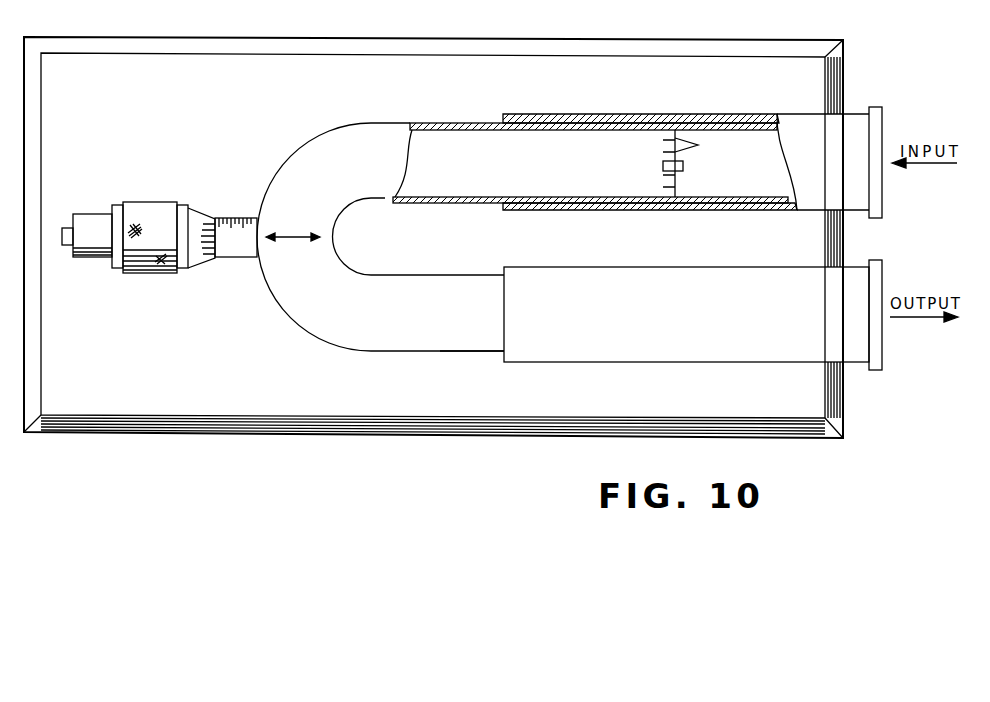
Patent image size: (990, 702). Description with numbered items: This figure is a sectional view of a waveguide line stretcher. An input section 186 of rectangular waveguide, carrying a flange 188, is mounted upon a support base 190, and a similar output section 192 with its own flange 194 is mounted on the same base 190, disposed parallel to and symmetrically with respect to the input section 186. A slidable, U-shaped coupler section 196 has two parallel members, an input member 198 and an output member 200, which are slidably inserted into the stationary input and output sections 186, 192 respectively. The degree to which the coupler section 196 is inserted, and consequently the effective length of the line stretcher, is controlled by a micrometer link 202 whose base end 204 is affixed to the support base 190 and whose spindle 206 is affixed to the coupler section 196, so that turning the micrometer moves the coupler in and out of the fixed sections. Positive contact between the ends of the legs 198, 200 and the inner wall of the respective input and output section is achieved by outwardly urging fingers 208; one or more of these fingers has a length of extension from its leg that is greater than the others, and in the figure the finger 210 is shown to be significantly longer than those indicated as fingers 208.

The input section 186 is at (855, 160).
The flange 188 is at (881, 218).
The support base 190 is at (220, 120).
The output section 192 is at (727, 315).
The flange 194 is at (881, 370).
The U-shaped coupler section 196 is at (286, 312).
The input member 198 is at (473, 123).
The output member 200 is at (465, 352).
The micrometer link 202 is at (160, 273).
The base end 204 is at (63, 247).
The spindle 206 is at (222, 258).
The fingers 208 is at (705, 148).
The finger 210 is at (683, 167).